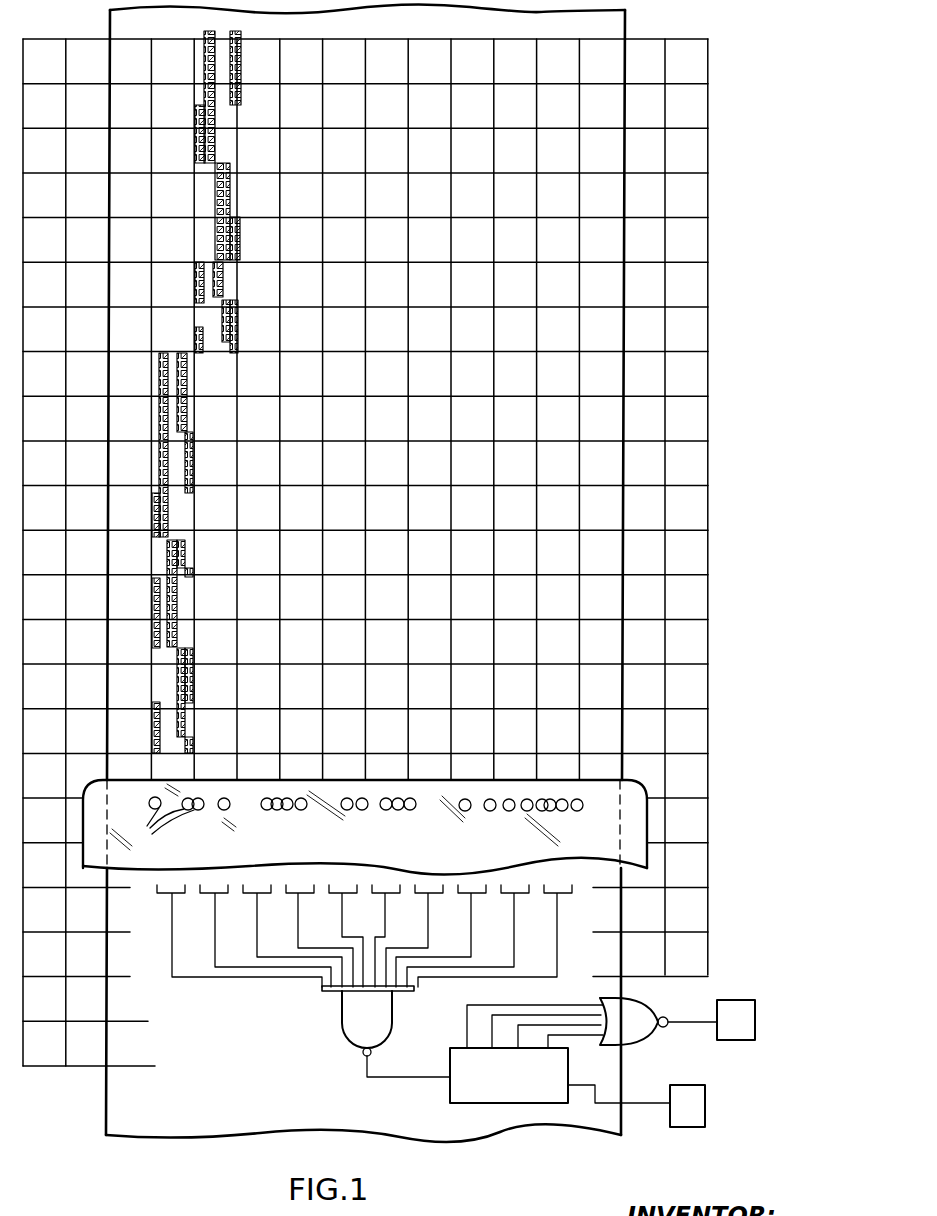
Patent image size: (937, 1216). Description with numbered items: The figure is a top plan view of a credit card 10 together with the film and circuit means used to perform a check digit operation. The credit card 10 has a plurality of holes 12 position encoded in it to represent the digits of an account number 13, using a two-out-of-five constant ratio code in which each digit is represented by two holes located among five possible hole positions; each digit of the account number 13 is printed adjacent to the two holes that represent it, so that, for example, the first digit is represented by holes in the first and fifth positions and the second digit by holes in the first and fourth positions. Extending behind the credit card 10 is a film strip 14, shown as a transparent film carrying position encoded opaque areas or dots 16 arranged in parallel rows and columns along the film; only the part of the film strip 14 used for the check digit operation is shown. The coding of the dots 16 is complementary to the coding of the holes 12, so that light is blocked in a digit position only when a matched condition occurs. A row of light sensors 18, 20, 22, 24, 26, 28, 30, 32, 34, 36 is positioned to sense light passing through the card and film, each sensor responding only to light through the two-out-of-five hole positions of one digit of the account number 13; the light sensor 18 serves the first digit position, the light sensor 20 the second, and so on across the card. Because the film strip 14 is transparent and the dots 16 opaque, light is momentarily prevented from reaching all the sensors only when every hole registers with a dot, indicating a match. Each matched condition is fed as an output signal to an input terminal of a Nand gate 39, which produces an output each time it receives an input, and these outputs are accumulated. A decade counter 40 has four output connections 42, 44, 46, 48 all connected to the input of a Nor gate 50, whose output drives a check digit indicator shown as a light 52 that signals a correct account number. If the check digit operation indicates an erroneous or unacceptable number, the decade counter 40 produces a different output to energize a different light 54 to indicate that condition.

The credit card 10 is at (136, 875).
The holes 12 is at (160, 816).
The account number 13 is at (580, 847).
The film strip 14 is at (630, 568).
The opaque areas or dots 16 is at (207, 681).
The light sensor 18 is at (160, 896).
The light sensor 20 is at (208, 899).
The light sensor 22 is at (250, 898).
The light sensor 24 is at (293, 898).
The light sensor 26 is at (340, 896).
The light sensor 28 is at (386, 896).
The light sensor 30 is at (436, 896).
The light sensor 32 is at (485, 895).
The light sensor 34 is at (522, 896).
The light sensor 36 is at (566, 896).
The Nand gate 39 is at (352, 1030).
The decade counter 40 is at (470, 1087).
The output connection 42 is at (512, 1003).
The output connection 44 is at (562, 1003).
The output connection 46 is at (573, 1020).
The output connection 48 is at (583, 1036).
The Nor gate 50 is at (650, 1012).
The light 52 is at (755, 1022).
The light 54 is at (705, 1103).